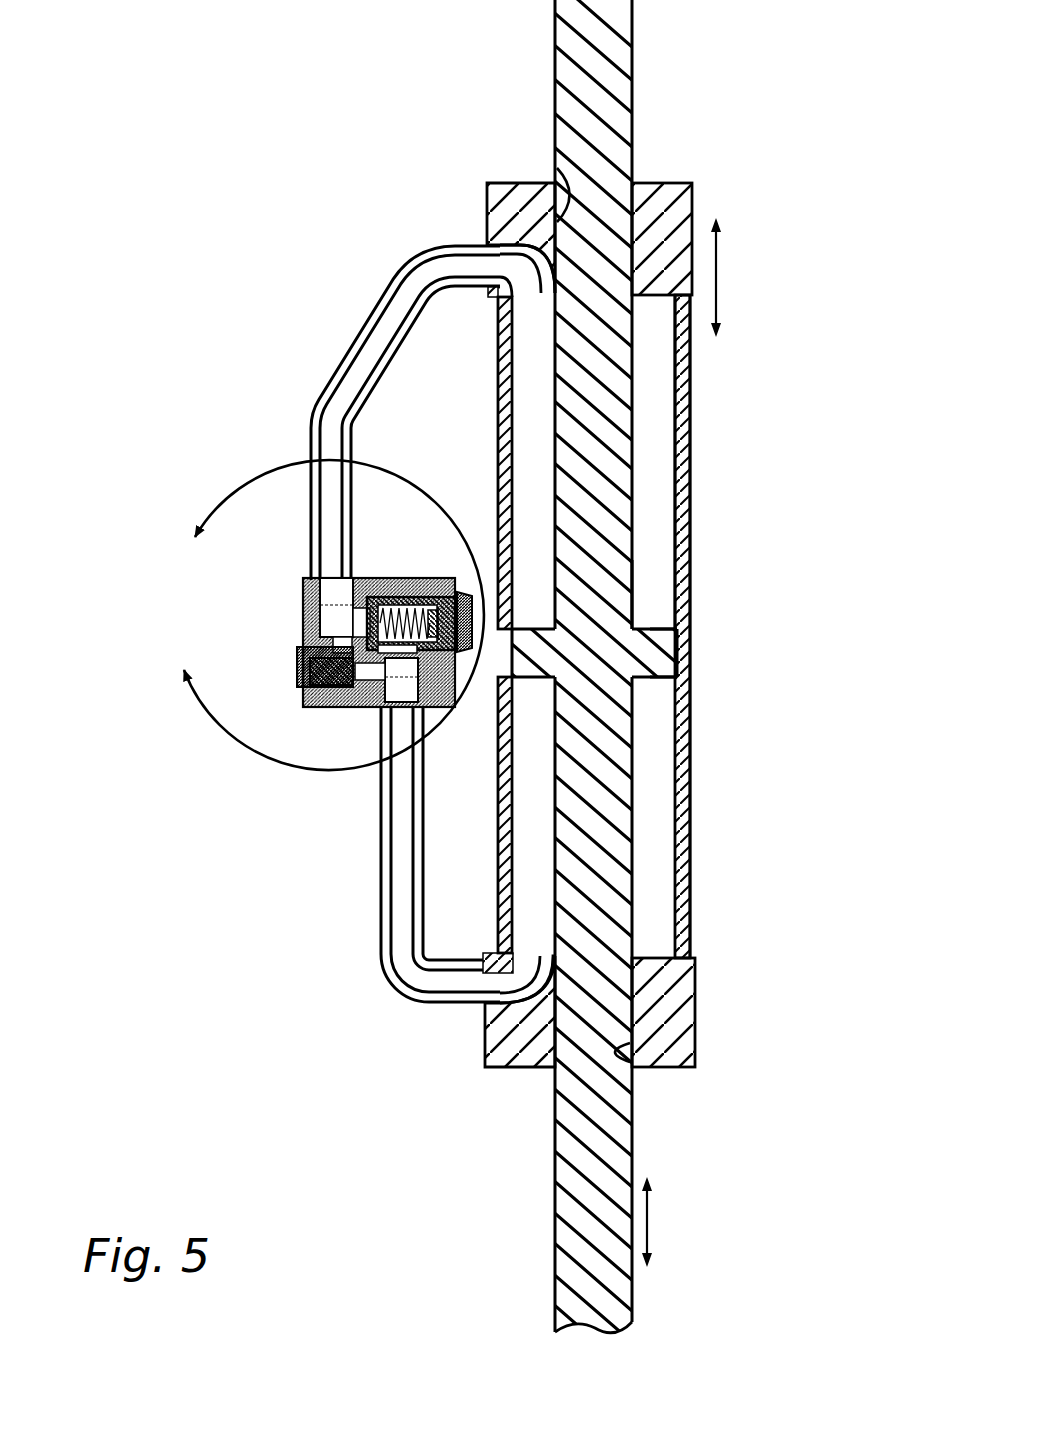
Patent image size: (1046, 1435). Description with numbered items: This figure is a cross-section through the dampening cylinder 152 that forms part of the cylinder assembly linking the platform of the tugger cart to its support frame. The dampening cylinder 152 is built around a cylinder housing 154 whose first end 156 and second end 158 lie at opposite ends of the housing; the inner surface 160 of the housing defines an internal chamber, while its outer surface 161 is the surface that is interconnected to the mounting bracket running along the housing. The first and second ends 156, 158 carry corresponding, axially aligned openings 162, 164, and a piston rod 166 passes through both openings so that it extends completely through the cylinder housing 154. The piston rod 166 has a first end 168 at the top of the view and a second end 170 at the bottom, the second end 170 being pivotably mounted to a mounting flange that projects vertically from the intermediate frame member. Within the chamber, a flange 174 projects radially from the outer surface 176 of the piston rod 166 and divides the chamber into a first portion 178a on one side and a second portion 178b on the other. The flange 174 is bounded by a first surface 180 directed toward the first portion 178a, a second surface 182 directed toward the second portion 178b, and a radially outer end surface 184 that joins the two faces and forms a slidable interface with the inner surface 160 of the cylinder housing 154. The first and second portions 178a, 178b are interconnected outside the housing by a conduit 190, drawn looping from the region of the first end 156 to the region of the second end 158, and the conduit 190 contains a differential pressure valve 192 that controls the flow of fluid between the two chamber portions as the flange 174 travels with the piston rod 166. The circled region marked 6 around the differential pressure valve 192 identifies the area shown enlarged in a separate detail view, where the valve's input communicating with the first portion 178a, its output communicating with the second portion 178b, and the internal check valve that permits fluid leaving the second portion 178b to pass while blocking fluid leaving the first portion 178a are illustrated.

The dampening cylinder 152 is at (595, 709).
The cylinder housing 154 is at (714, 1021).
The first end 156 is at (702, 181).
The second end 158 is at (483, 1040).
The inner surface 160 is at (667, 819).
The outer surface 161 is at (691, 893).
The opening 162 is at (556, 165).
The opening 164 is at (631, 1065).
The piston rod 166 is at (551, 1132).
The first end 168 is at (552, 16).
The second end 170 is at (551, 1326).
The flange 174 is at (650, 655).
The outer surface 176 is at (645, 390).
The first portion 178a is at (535, 478).
The second portion 178b is at (535, 845).
The first surface 180 is at (660, 625).
The second surface 182 is at (654, 678).
The radially outer end surface 184 is at (692, 656).
The conduit 190 is at (399, 255).
The differential pressure valve 192 is at (300, 716).
The section view indicator 6 is at (328, 615).